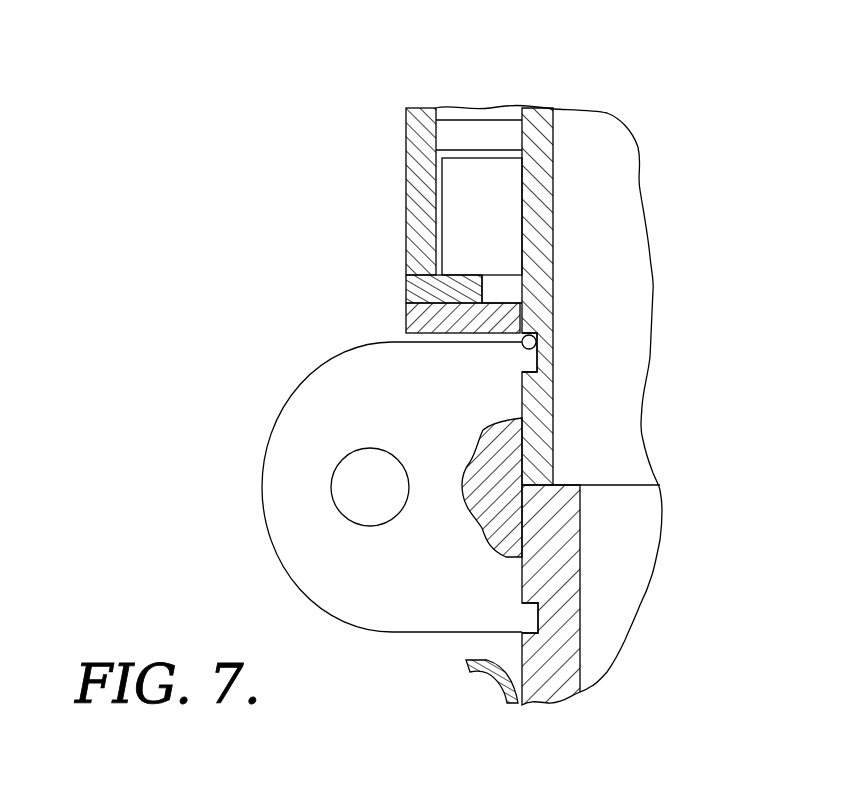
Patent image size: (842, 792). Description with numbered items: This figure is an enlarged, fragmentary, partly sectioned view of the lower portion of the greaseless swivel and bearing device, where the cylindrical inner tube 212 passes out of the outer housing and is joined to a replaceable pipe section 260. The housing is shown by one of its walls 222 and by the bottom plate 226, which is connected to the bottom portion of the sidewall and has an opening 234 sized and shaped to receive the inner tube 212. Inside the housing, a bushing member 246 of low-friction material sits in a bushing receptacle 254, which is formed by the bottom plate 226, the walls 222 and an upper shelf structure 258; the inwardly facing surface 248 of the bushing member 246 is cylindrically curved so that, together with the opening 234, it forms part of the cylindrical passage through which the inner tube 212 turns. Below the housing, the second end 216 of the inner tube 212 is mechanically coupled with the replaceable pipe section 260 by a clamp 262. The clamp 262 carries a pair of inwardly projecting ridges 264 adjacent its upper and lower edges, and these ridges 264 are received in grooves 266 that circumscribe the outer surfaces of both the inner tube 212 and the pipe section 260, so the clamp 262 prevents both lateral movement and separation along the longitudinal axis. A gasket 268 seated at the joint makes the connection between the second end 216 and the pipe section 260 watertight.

The inner tube 212 is at (542, 197).
The second end of the inner tube 216 is at (637, 462).
The wall 222 is at (415, 198).
The bottom plate 226 is at (407, 315).
The opening in the bottom plate 234 is at (510, 290).
The bushing member 246 is at (465, 222).
The inwardly facing surface 248 is at (533, 172).
The bushing receptacle 254 is at (448, 153).
The upper shelf structure 258 is at (506, 127).
The replaceable pipe section 260 is at (627, 555).
The clamp 262 is at (317, 583).
The ridge 264 is at (528, 359).
The groove 266 is at (527, 336).
The gasket 268 is at (492, 433).